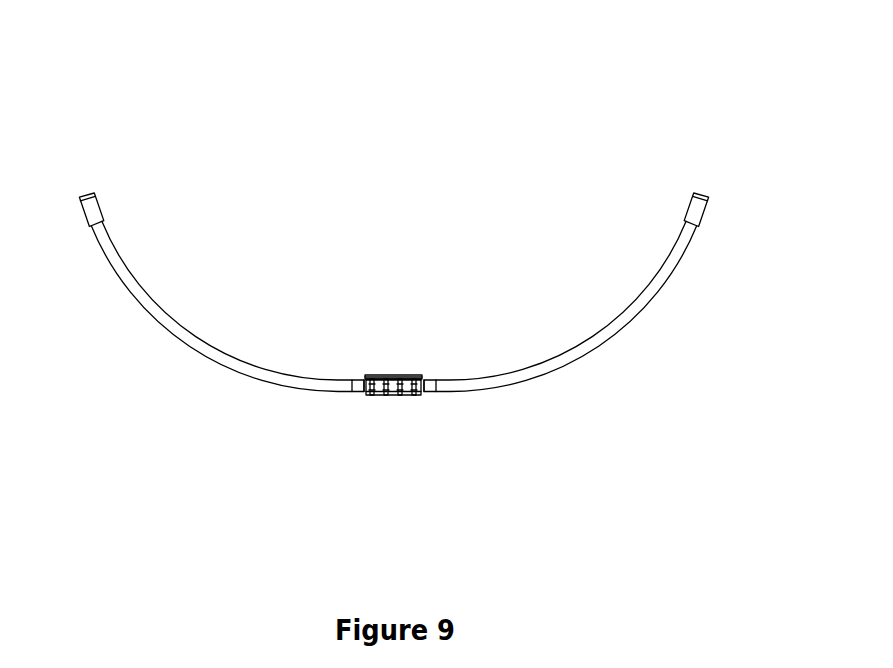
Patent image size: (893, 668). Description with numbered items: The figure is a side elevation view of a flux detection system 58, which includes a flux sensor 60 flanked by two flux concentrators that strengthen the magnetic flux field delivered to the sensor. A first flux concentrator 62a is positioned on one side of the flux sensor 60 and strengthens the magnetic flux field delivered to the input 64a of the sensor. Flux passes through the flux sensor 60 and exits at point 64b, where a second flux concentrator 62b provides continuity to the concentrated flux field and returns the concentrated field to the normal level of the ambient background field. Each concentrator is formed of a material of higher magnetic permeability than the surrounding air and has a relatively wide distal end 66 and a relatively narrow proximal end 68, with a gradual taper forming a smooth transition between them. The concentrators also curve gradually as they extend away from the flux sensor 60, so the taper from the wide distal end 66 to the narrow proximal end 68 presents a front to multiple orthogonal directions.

The flux detection system 58 is at (447, 92).
The flux sensor 60 is at (395, 394).
The first flux concentrator 62a is at (177, 338).
The second flux concentrator 62b is at (615, 334).
The input 64a is at (357, 391).
The point 64b is at (431, 391).
The distal end 66 is at (81, 194).
The proximal end 68 is at (358, 382).